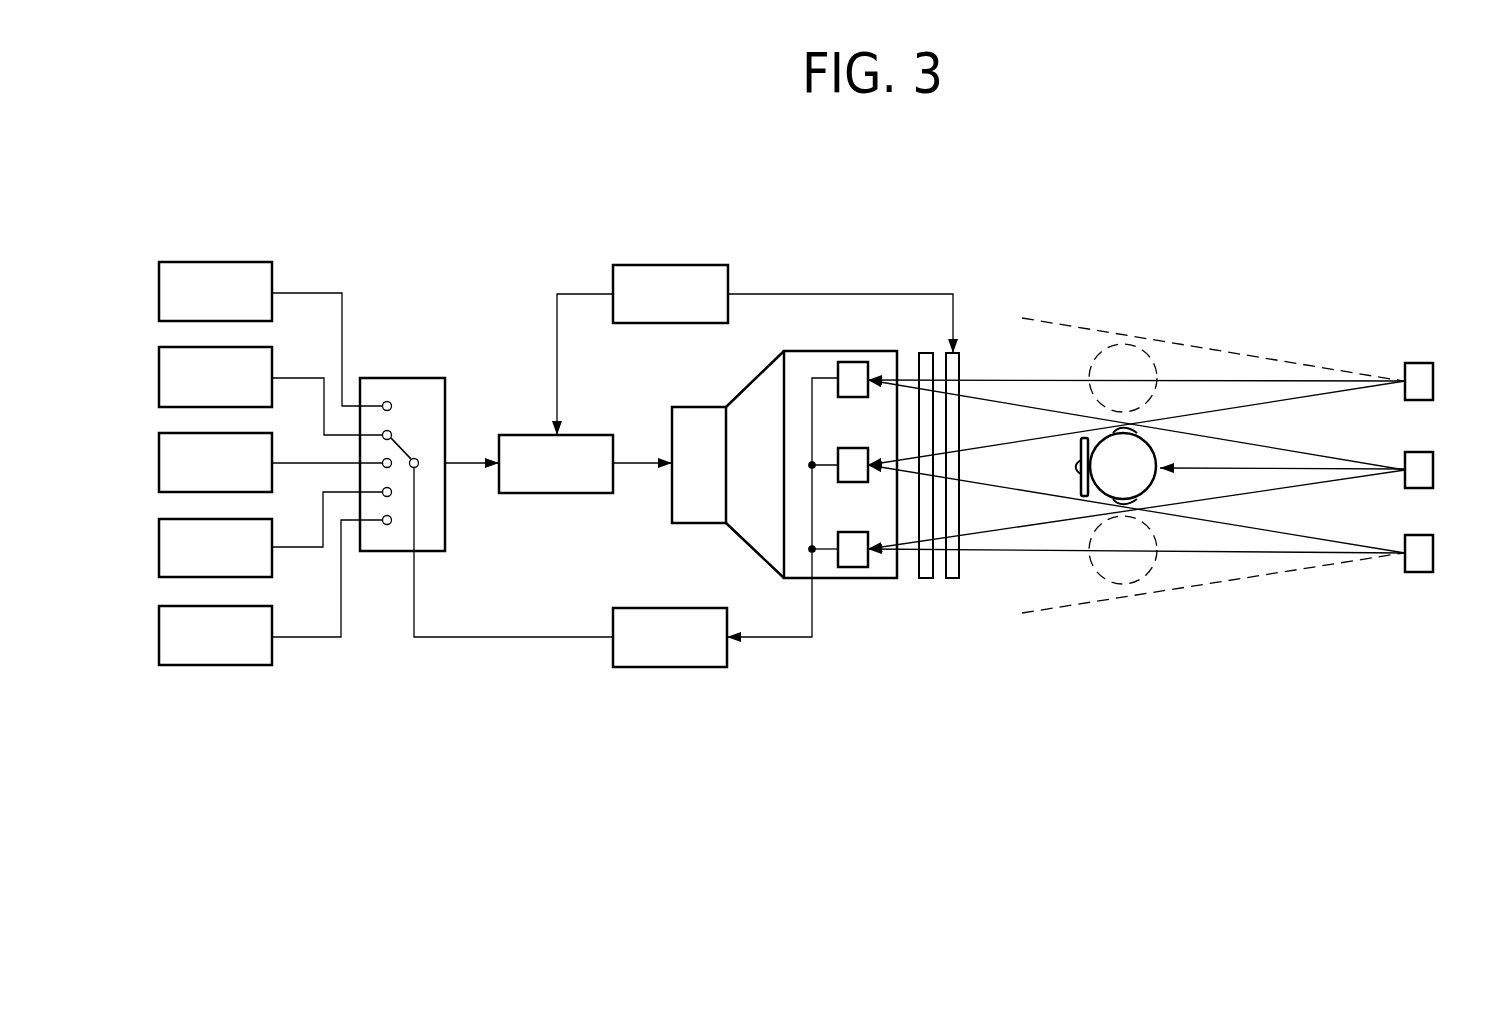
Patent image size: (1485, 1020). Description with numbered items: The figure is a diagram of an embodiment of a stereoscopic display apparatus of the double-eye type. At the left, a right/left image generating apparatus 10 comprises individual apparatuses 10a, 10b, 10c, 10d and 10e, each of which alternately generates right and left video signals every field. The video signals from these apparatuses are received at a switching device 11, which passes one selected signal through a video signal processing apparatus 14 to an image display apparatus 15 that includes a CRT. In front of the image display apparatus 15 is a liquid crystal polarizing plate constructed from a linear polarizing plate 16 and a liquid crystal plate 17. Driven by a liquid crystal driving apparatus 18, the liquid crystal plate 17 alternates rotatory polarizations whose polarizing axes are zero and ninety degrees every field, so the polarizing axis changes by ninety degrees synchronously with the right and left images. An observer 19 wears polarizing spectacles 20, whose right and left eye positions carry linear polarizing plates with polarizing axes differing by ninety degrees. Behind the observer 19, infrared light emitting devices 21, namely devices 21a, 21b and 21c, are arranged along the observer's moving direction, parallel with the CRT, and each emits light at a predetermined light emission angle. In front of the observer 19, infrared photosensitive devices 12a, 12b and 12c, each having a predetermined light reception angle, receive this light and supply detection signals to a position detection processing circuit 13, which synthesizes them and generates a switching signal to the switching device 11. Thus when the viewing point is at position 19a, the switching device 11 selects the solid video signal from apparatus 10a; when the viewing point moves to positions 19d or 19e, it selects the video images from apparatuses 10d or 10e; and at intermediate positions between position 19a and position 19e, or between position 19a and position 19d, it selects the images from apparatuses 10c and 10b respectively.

The right/left image generating apparatus 10 is at (230, 723).
The right/left image generating apparatus 10a is at (273, 442).
The right/left image generating apparatus 10b is at (273, 527).
The right/left image generating apparatus 10c is at (273, 355).
The right/left image generating apparatus 10d is at (273, 616).
The right/left image generating apparatus 10e is at (273, 270).
The switching device 11 is at (430, 377).
The infrared photosensitive device 12a is at (855, 448).
The infrared photosensitive device 12b is at (855, 532).
The infrared photosensitive device 12c is at (859, 362).
The position detection processing circuit 13 is at (652, 669).
The video signal processing apparatus 14 is at (525, 494).
The image display apparatus 15 is at (694, 406).
The linear polarizing plate 16 is at (926, 580).
The liquid crystal plate 17 is at (953, 580).
The liquid crystal driving apparatus 18 is at (703, 264).
The observer 19 is at (1156, 704).
The position 19a is at (1158, 480).
The position 19d is at (1143, 580).
The position 19e is at (1138, 348).
The polarizing spectacles 20 is at (1080, 480).
The infrared light emitting devices 21 is at (1437, 637).
The infrared light emitting device 21a is at (1433, 454).
The infrared light emitting device 21b is at (1433, 537).
The infrared light emitting device 21c is at (1433, 365).